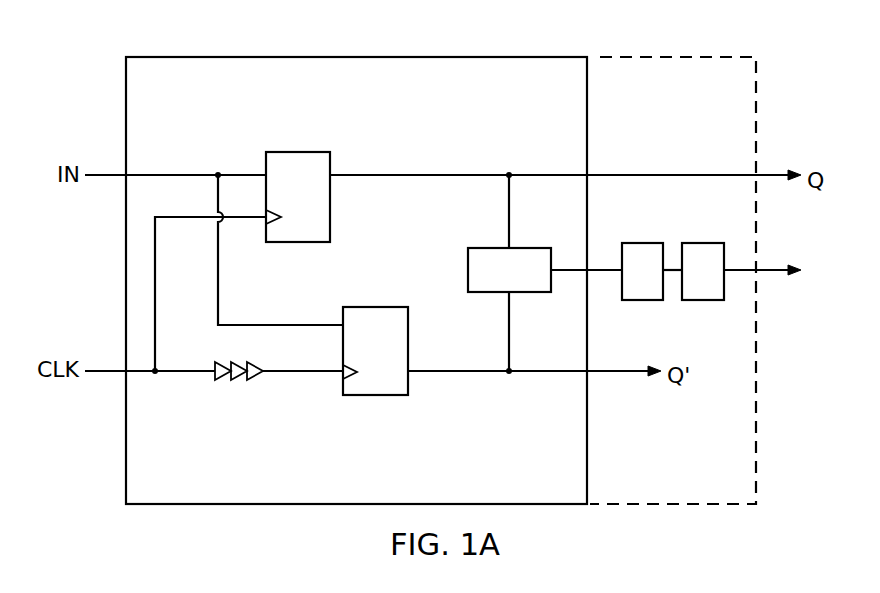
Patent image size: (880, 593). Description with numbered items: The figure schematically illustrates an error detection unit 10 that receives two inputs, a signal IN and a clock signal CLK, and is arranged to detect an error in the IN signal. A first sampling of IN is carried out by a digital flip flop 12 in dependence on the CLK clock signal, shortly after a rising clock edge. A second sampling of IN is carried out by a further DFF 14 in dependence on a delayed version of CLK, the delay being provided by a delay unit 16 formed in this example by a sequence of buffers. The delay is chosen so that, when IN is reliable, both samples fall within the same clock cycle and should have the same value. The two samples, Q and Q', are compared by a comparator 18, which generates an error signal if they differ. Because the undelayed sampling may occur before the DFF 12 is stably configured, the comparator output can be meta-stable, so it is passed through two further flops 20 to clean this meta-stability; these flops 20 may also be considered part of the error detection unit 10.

The error detection unit 10 is at (205, 57).
The digital flip flop 12 is at (298, 152).
The DFF 14 is at (379, 307).
The delay unit 16 is at (262, 394).
The comparator 18 is at (490, 248).
The two further flops 20 is at (724, 312).